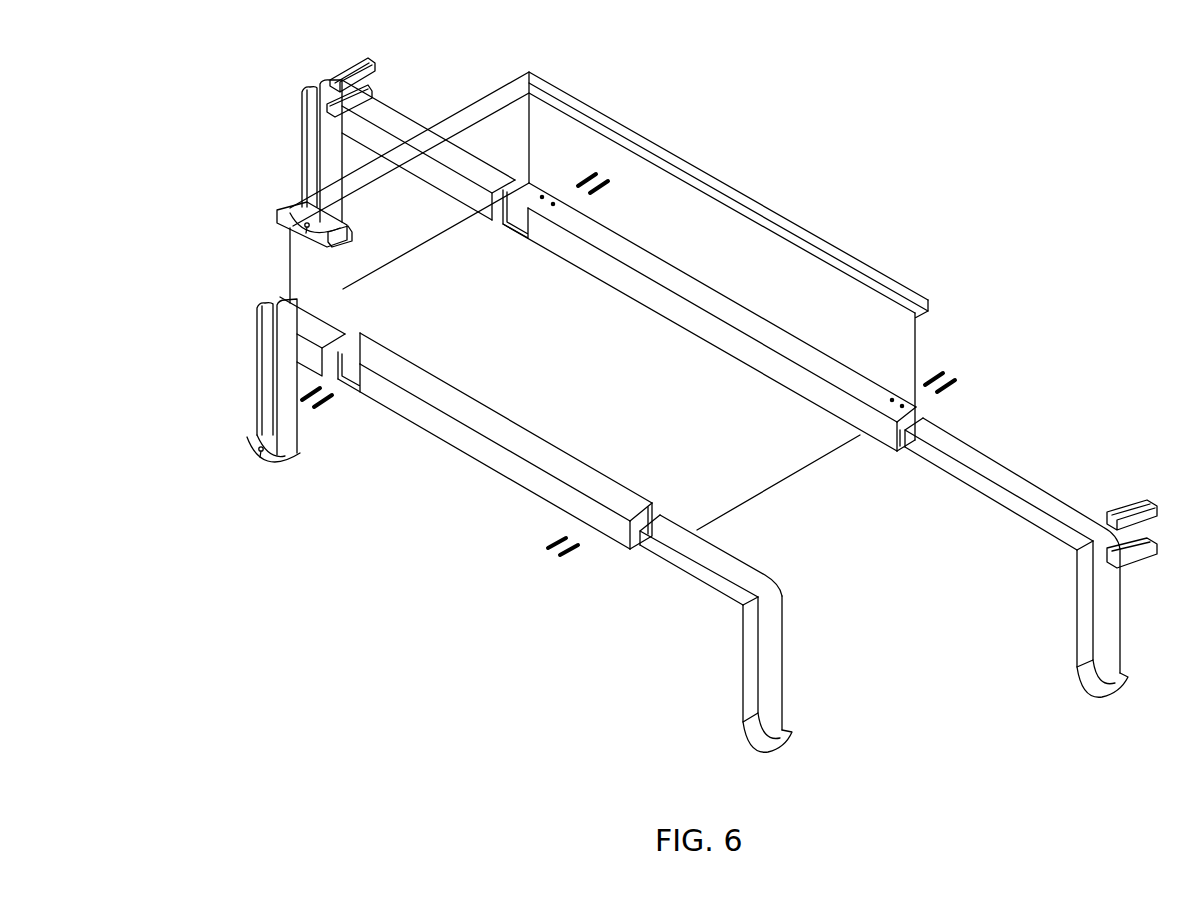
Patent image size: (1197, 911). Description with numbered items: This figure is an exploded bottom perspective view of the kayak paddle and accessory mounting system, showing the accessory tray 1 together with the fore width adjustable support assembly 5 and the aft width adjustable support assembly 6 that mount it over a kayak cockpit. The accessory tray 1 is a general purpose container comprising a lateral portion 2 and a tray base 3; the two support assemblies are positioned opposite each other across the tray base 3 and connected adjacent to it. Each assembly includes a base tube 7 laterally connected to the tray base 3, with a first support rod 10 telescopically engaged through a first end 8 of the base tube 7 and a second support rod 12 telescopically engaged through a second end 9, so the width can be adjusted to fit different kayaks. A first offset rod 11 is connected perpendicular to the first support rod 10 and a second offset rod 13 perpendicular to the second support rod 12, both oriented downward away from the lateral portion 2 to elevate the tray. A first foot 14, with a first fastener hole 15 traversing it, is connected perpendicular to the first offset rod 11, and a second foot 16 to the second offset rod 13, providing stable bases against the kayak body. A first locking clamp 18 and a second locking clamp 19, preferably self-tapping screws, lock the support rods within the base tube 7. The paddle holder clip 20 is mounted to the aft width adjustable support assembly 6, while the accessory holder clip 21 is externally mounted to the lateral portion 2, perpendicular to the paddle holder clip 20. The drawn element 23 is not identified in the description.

The accessory tray 1 is at (795, 490).
The lateral portion 2 is at (397, 229).
The tray base 3 is at (555, 367).
The fore width adjustable support assembly 5 is at (242, 337).
The aft width adjustable support assembly 6 is at (690, 304).
The base tube 7 is at (456, 397).
The first end 8 is at (520, 230).
The second end 9 is at (652, 512).
The first support rod 10 is at (415, 132).
The first offset rod 11 is at (302, 108).
The second support rod 12 is at (695, 580).
The second offset rod 13 is at (784, 655).
The first foot 14 is at (312, 250).
The first fastener hole 15 is at (303, 232).
The second foot 16 is at (752, 745).
The first locking clamp 18 is at (604, 185).
The second locking clamp 19 is at (545, 555).
The paddle holder clip 20 is at (365, 66).
The accessory holder clip 21 is at (353, 244).
The top flange 23 is at (690, 182).